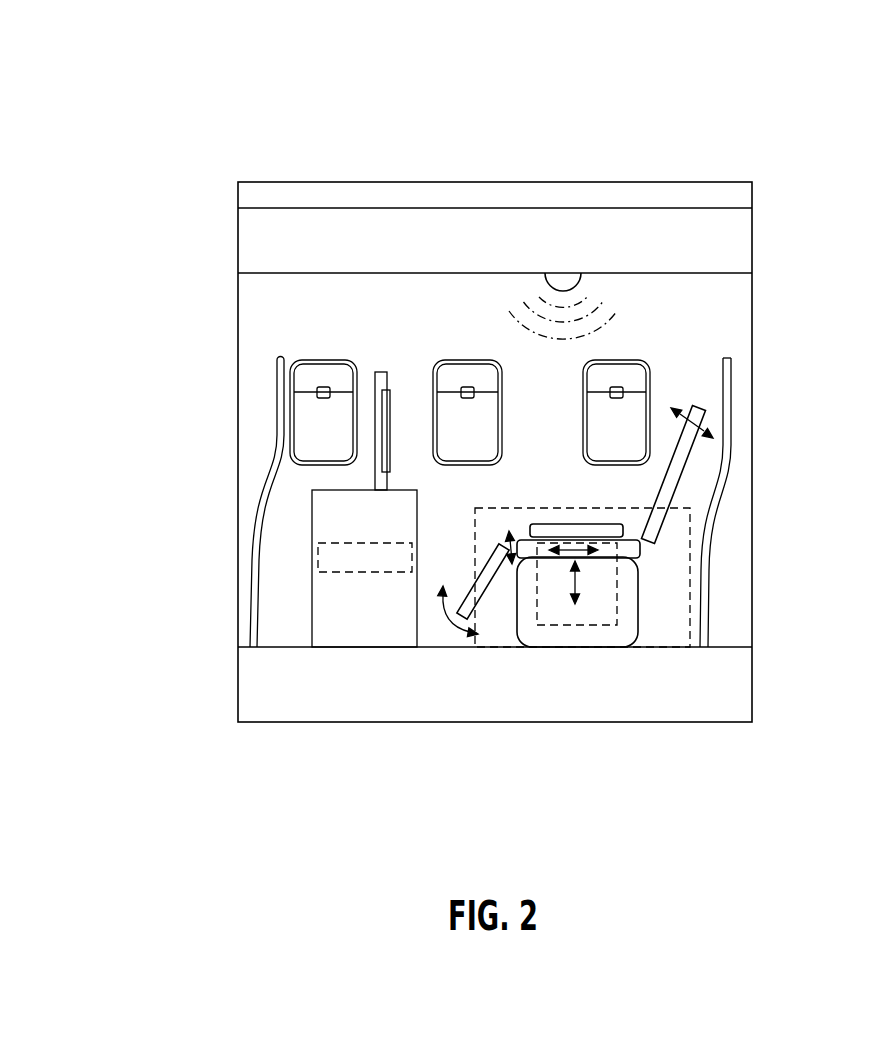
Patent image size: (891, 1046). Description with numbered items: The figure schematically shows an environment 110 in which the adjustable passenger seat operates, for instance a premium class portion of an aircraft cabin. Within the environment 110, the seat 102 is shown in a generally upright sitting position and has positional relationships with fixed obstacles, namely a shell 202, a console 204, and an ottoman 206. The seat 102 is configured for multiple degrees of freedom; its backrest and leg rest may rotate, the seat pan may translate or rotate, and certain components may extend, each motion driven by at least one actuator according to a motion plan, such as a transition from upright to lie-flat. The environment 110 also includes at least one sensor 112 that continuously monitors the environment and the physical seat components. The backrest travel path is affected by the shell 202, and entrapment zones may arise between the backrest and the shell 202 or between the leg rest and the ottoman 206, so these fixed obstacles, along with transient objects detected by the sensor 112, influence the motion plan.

The environment 110 is at (195, 143).
The sensor 112 is at (563, 277).
The shell 202 is at (727, 393).
The seat 102 is at (683, 470).
The ottoman 206 is at (343, 557).
The console 204 is at (675, 618).